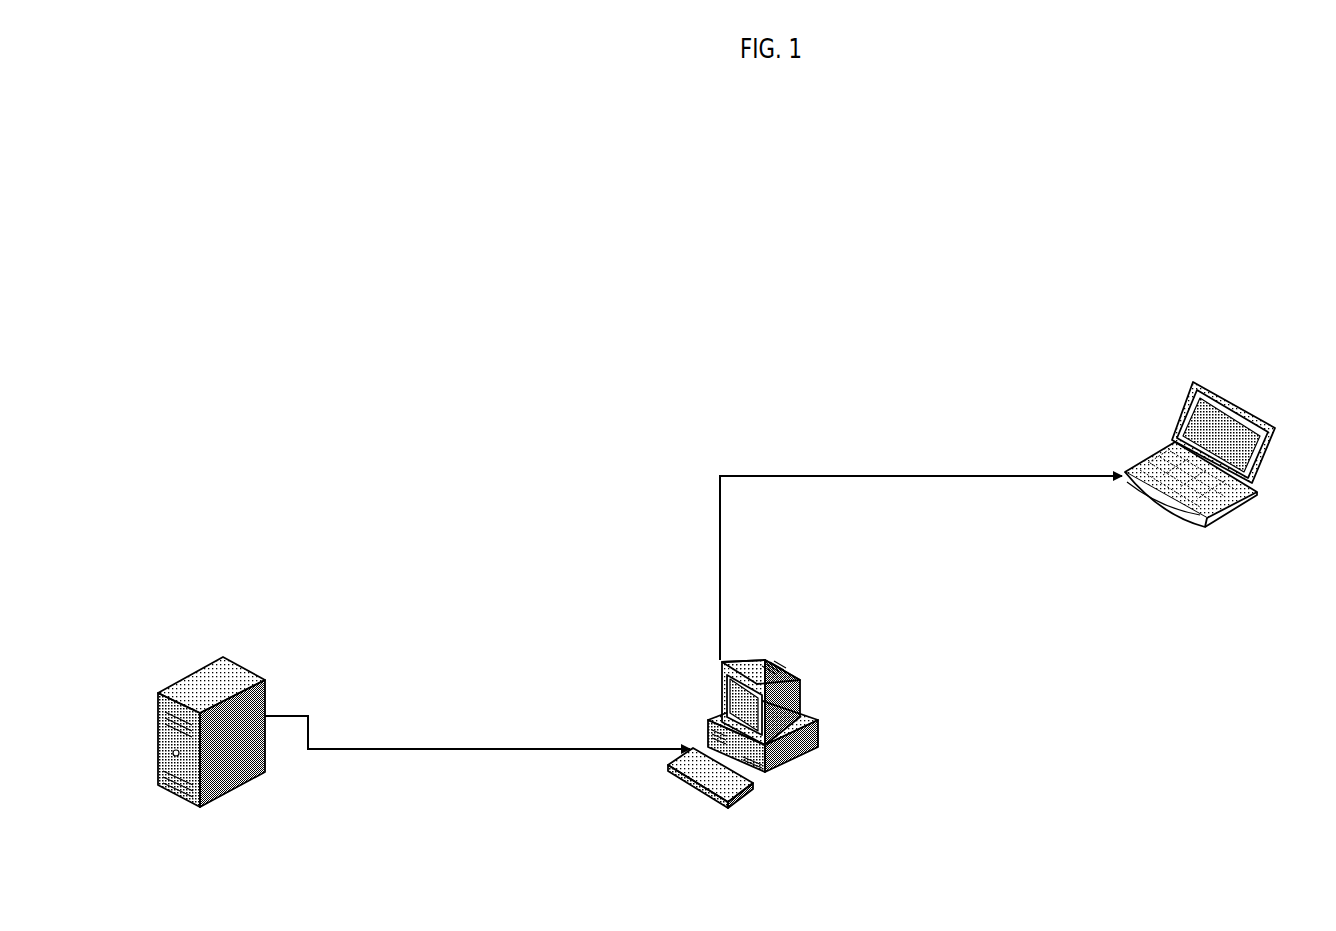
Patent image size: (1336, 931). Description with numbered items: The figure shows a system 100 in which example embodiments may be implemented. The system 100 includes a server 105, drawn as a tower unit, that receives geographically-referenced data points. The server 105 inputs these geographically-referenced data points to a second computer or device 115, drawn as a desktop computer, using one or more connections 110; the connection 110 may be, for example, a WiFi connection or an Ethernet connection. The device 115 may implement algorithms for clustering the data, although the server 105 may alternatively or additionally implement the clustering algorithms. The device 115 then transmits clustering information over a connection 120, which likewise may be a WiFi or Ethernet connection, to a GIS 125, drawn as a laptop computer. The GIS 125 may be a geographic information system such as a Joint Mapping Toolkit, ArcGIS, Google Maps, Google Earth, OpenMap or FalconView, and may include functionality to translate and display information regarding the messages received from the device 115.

The system 100 is at (1127, 225).
The server 105 is at (250, 667).
The connection 110 is at (388, 748).
The device 115 is at (782, 668).
The connection 120 is at (862, 475).
The GIS 125 is at (1233, 397).